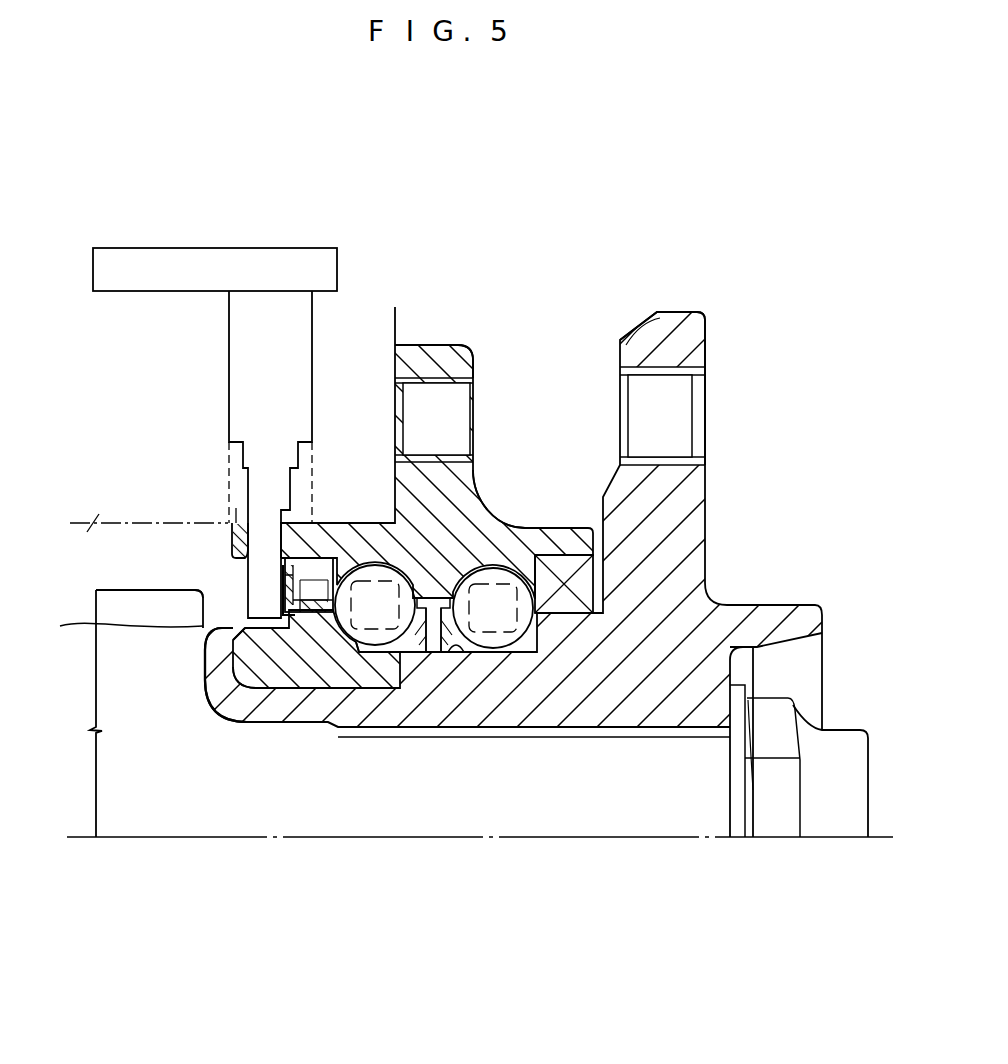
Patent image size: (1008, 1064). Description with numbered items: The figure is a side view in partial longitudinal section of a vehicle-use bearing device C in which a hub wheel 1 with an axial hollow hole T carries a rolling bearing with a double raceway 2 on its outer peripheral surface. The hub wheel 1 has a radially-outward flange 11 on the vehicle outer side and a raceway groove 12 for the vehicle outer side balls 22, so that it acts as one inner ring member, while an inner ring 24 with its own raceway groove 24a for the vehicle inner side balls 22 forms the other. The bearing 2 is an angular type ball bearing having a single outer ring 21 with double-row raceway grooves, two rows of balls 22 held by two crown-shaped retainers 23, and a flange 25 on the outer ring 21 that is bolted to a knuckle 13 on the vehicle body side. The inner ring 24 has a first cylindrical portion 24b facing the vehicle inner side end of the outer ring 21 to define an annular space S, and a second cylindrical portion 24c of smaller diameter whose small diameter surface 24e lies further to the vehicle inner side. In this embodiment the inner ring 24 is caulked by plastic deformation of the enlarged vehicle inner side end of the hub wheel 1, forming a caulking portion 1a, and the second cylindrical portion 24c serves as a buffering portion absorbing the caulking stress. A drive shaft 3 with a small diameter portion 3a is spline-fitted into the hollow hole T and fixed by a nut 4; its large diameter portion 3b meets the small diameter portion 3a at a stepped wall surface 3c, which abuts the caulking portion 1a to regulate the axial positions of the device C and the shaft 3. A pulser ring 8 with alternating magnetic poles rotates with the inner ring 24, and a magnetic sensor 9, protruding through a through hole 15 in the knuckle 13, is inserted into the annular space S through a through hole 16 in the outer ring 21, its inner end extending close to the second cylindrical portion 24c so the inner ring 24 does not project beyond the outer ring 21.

The hub wheel 1 is at (722, 581).
The caulking portion 1a is at (216, 688).
The rolling bearing with a double raceway 2 is at (548, 494).
The drive shaft 3 is at (128, 584).
The small diameter portion 3a is at (567, 825).
The large diameter portion 3b is at (160, 603).
The stepped wall surface 3c is at (110, 626).
The nut 4 is at (843, 741).
The pulser ring 8 is at (290, 560).
The magnetic sensor 9 is at (253, 581).
The flange 11 is at (690, 326).
The raceway groove 12 is at (452, 654).
The knuckle 13 is at (90, 528).
The through hole 15 is at (236, 509).
The through hole 16 is at (258, 541).
The outer ring 21 is at (477, 501).
The balls 22 is at (381, 575).
The crown-shaped retainers 23 is at (420, 654).
The inner ring 24 is at (323, 698).
The raceway groove 24a is at (353, 641).
The first cylindrical portion 24b is at (299, 656).
The second cylindrical portion 24c is at (256, 671).
The small diameter surface 24e is at (212, 631).
The flange 25 is at (448, 354).
The bearing device C is at (486, 234).
The annular space S is at (322, 575).
The hollow hole T is at (613, 736).